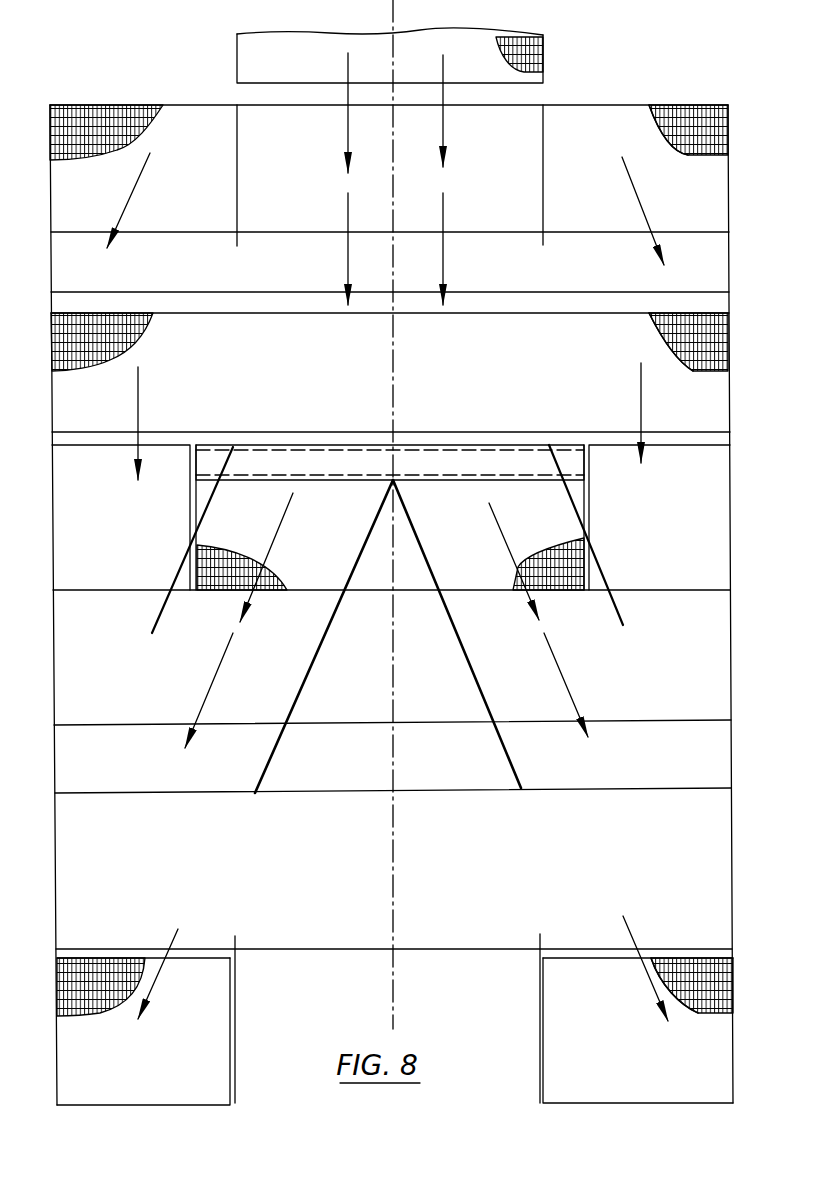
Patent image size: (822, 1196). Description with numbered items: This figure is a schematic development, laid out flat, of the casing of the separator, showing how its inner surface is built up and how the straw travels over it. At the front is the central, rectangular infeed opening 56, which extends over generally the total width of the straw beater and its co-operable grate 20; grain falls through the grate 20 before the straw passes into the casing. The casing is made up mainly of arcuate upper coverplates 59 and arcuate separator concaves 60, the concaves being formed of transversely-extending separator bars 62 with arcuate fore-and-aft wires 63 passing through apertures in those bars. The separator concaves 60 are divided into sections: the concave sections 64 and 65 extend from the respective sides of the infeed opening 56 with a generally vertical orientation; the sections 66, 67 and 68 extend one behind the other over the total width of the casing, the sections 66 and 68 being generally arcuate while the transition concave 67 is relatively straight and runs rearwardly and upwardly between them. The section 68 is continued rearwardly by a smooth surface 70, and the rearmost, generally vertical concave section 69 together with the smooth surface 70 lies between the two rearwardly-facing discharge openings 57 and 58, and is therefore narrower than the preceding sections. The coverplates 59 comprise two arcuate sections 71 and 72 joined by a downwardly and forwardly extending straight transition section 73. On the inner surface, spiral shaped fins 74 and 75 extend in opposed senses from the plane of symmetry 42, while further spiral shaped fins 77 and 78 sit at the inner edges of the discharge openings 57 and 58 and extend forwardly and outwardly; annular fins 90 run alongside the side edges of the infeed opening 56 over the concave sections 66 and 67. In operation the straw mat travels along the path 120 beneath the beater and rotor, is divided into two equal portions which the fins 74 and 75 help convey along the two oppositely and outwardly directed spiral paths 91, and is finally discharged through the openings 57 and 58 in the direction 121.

The grate 20 is at (544, 53).
The plane of symmetry 42 is at (395, 372).
The infeed opening 56 is at (325, 1032).
The discharge opening 57 is at (603, 443).
The discharge opening 58 is at (182, 445).
The coverplates 59 is at (730, 707).
The separator concaves 60 is at (731, 112).
The separator bars 62 is at (678, 132).
The wires 63 is at (678, 140).
The concave section 64 is at (540, 1032).
The concave section 65 is at (224, 1041).
The concave section 66 is at (102, 105).
The transition concave 67 is at (85, 232).
The concave section 68 is at (172, 313).
The rearmost concave section 69 is at (588, 502).
The smooth surface 70 is at (302, 445).
The arcuate section 71 is at (730, 640).
The arcuate section 72 is at (730, 857).
The transition section 73 is at (730, 763).
The spiral shaped fin 74 is at (426, 553).
The spiral shaped fin 75 is at (373, 523).
The spiral shaped fin 77 is at (568, 500).
The spiral shaped fin 78 is at (215, 497).
The annular fins 90 is at (237, 198).
The spiral paths 91 is at (137, 183).
The path 120 is at (443, 133).
The direction 121 is at (138, 388).